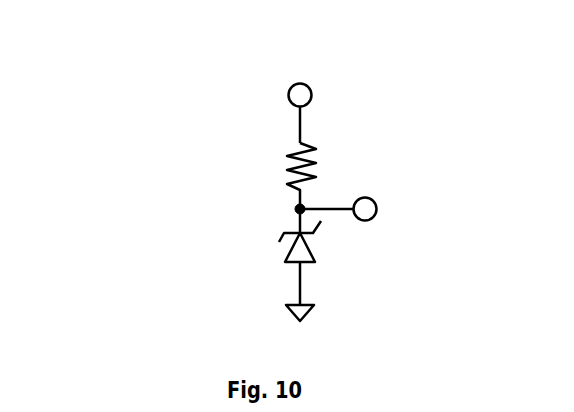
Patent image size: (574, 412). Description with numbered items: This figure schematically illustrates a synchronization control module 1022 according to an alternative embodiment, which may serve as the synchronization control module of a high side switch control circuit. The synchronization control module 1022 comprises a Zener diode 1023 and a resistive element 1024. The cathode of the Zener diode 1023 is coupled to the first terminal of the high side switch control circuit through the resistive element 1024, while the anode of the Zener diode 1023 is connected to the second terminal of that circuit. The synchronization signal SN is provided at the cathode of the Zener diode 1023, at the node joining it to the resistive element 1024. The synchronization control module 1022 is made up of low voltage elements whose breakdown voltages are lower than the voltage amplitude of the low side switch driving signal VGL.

The synchronization control module 1022 is at (165, 106).
The resistive element 1024 is at (278, 183).
The Zener diode 1023 is at (278, 255).